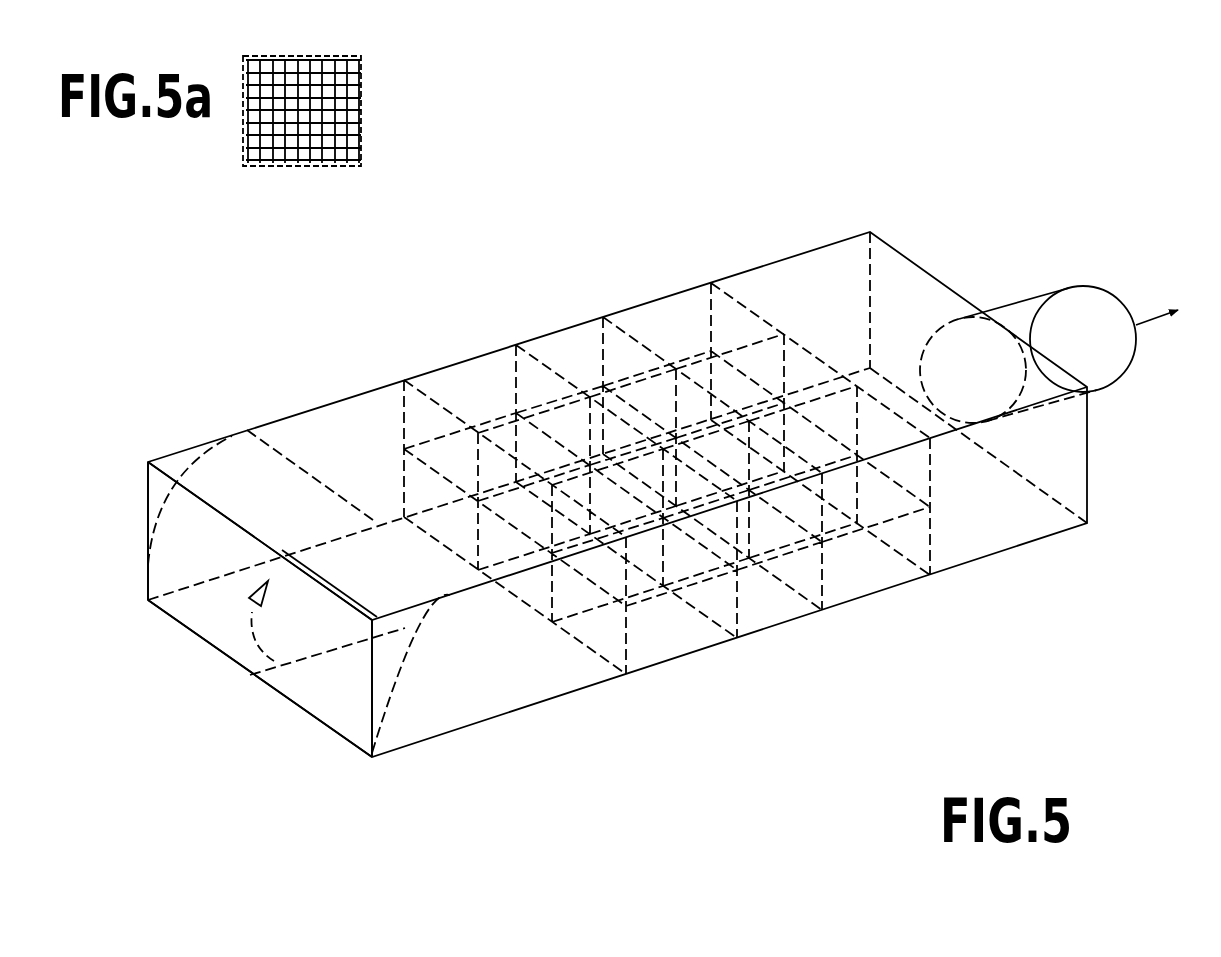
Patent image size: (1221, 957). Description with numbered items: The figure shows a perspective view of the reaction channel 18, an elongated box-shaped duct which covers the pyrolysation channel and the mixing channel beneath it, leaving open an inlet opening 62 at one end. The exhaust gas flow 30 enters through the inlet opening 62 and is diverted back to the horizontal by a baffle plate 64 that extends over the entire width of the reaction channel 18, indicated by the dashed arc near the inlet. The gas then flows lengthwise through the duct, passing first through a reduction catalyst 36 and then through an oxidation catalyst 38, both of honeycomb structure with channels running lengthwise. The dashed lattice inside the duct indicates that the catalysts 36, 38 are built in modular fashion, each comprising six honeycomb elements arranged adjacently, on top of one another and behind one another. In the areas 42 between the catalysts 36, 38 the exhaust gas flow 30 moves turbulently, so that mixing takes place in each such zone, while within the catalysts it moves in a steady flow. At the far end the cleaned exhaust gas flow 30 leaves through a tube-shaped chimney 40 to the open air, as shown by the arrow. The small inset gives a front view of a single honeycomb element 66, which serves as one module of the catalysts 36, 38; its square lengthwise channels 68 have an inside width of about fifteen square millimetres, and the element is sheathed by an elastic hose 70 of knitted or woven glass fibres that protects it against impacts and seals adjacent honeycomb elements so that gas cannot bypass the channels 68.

In FIG. 5, the reaction channel 18 is at (239, 790).
In FIG. 5, the exhaust gas flow 30 is at (1152, 317).
In FIG. 5, the reduction catalyst 36 is at (655, 648).
In FIG. 5, the oxidation catalyst 38 is at (878, 573).
In FIG. 5, the tube-shaped chimney 40 is at (1017, 317).
In FIG. 5, the areas between the catalysts 42 is at (765, 612).
In FIG. 5, the inlet opening 62 is at (193, 612).
In FIG. 5, the baffle plate 64 is at (208, 460).
In FIG. 5a, the honeycomb element 66 is at (302, 131).
In FIG. 5a, the square lengthwise channels 68 is at (338, 122).
In FIG. 5a, the elastic hose 70 is at (337, 60).